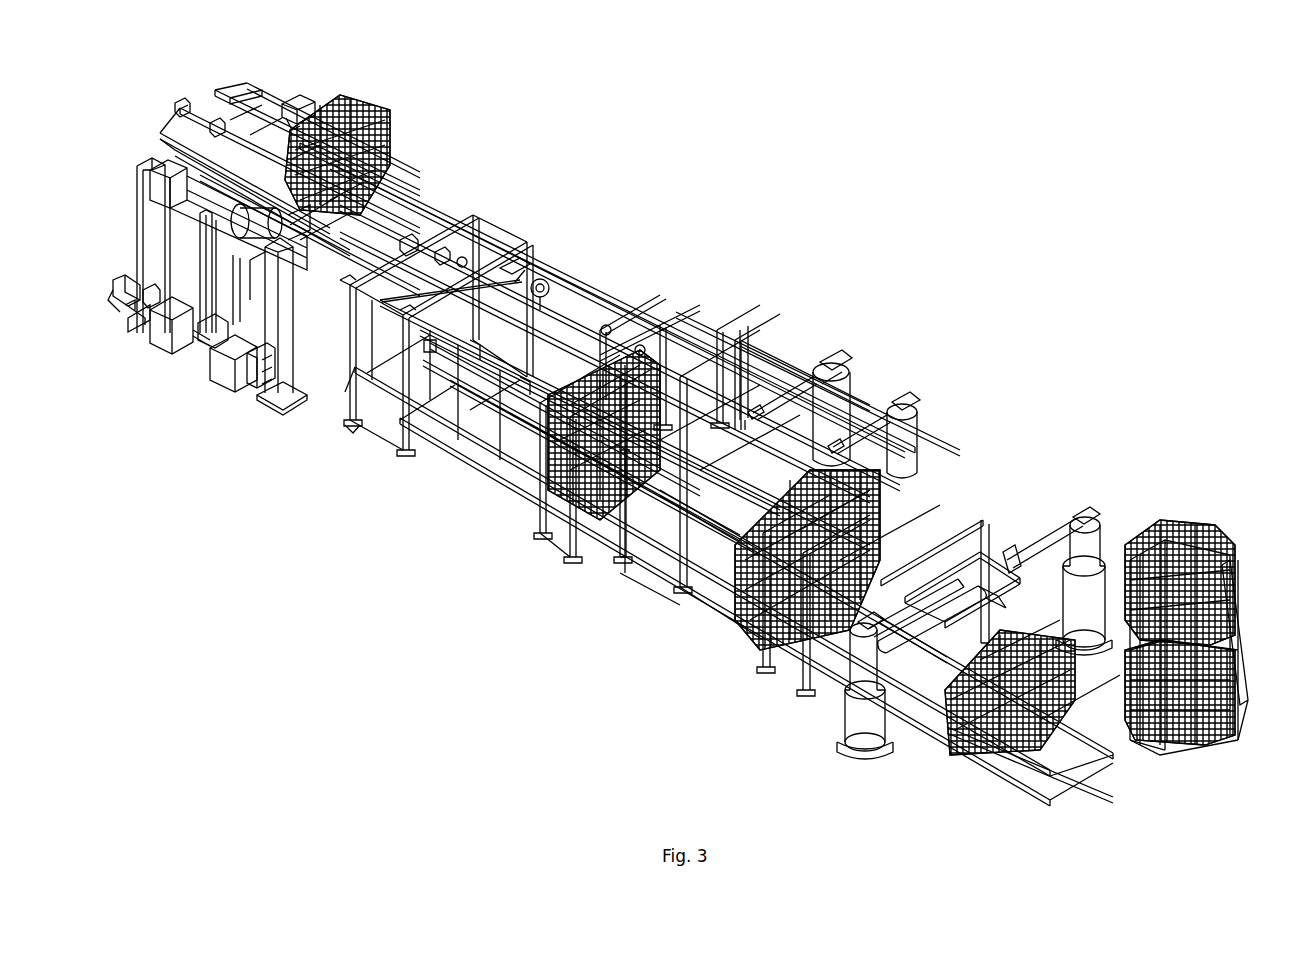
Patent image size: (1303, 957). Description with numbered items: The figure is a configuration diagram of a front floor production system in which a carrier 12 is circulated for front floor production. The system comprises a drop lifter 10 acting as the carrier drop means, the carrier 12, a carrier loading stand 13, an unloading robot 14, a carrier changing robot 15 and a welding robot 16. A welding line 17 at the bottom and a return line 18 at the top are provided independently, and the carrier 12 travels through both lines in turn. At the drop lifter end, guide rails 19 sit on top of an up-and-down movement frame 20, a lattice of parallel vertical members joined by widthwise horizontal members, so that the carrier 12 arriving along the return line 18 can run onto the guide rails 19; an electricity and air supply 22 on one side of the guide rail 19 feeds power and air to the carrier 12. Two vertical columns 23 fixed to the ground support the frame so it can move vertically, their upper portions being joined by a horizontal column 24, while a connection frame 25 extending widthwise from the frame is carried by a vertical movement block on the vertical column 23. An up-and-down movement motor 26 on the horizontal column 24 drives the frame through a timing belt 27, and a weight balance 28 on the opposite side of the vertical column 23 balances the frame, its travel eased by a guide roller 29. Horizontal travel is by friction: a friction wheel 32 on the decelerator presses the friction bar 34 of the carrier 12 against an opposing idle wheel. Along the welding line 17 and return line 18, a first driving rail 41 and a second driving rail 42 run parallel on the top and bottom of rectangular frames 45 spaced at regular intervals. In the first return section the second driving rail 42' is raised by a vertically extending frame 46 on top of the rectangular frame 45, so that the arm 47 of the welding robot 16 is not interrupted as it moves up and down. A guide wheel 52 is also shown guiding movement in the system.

The drop lifter 10 is at (266, 96).
The carrier 12 is at (1180, 540).
The carrier loading stand 13 is at (1250, 600).
The unloading robot 14 is at (840, 713).
The carrier changing robot 15 is at (1098, 530).
The welding robot 16 is at (856, 390).
The welding line 17 is at (436, 446).
The return line 18 is at (582, 292).
The guide rails 19 is at (410, 196).
The up-and-down movement frame 20 is at (205, 100).
The electricity and air supply 22 is at (306, 108).
The vertical columns 23 is at (142, 232).
The horizontal column 24 is at (150, 178).
The connection frame 25 is at (315, 286).
The up-and-down movement motor 26 is at (246, 346).
The timing belt 27 is at (200, 340).
The weight balance 28 is at (165, 328).
The guide roller 29 is at (242, 390).
The friction wheel 32 is at (535, 276).
The friction bar 34 is at (258, 96).
The first driving rail 41 is at (480, 470).
The second driving rail 42 is at (636, 343).
The second driving rail of the first return section 42' is at (818, 362).
The rectangular frames 45 is at (473, 216).
The vertically extending frame 46 is at (722, 330).
The arm 47 is at (805, 362).
The guide wheel 52 is at (178, 107).